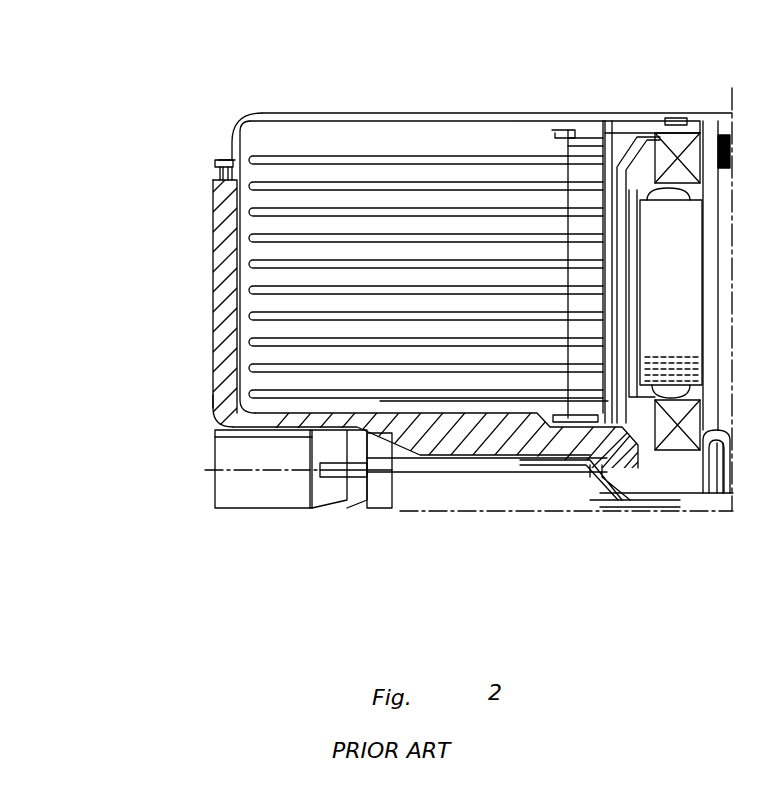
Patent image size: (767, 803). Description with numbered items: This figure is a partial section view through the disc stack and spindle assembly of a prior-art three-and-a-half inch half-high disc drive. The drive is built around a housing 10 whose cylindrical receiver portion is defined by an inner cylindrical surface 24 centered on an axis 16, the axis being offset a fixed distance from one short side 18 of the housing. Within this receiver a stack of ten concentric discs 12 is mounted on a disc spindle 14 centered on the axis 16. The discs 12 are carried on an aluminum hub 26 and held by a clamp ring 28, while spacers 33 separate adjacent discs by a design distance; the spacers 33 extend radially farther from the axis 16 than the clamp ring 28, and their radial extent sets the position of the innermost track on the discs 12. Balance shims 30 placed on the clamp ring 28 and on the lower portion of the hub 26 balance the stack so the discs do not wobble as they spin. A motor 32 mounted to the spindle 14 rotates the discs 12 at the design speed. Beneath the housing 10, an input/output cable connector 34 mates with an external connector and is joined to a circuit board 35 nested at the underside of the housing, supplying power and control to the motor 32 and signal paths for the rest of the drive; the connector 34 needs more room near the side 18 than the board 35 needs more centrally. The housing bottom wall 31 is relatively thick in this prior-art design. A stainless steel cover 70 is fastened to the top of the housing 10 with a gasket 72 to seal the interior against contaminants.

The housing 10 is at (212, 200).
The discs 12 is at (249, 293).
The disc spindle 14 is at (733, 240).
The axis 16 is at (732, 92).
The short side 18 is at (213, 348).
The inner cylindrical surface 24 is at (243, 252).
The aluminum hub 26 is at (625, 133).
The clamp ring 28 is at (565, 147).
The balance shims 30 is at (558, 131).
The bottom wall 31 is at (568, 467).
The motor 32 is at (680, 266).
The spacers 33 is at (568, 200).
The input/output cable connector 34 is at (278, 510).
The circuit board 35 is at (472, 474).
The cover 70 is at (263, 113).
The gasket 72 is at (222, 160).